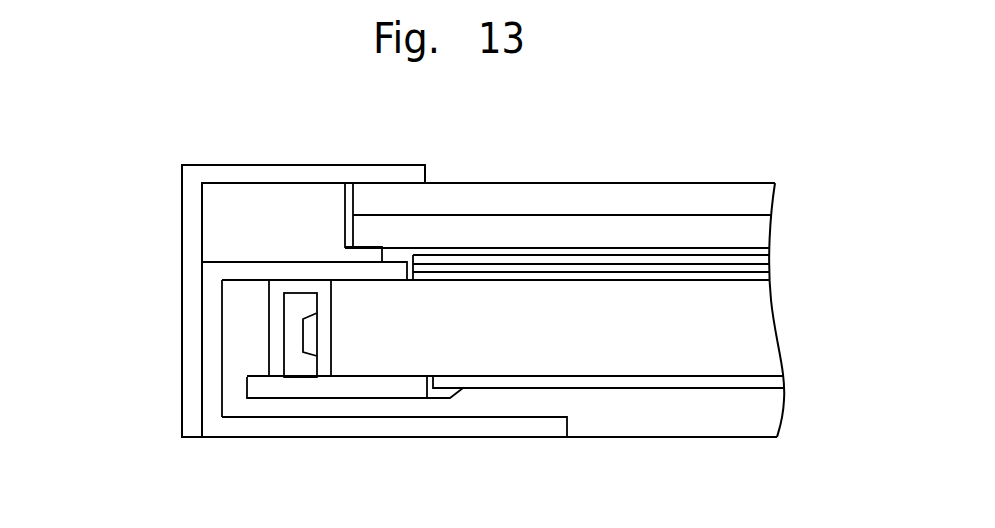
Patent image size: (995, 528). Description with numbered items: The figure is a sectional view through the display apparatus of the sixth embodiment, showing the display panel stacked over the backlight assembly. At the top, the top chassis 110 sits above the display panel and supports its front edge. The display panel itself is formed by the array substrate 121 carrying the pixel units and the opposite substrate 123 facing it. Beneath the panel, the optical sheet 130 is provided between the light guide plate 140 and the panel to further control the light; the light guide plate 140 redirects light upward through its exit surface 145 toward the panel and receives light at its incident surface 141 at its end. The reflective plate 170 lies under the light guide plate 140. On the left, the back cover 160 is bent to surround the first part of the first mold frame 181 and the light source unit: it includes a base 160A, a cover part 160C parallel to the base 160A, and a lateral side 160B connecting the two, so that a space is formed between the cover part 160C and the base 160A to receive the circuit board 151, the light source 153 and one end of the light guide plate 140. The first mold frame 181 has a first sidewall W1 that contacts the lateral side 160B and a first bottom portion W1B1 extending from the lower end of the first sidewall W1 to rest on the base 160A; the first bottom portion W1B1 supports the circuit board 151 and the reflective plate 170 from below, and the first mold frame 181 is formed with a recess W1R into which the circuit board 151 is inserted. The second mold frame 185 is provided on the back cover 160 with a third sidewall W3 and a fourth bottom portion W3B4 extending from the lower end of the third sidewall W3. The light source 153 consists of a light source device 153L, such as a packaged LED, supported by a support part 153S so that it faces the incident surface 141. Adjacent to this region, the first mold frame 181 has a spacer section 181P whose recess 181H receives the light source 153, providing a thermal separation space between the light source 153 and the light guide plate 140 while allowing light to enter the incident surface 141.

The top chassis 110 is at (397, 156).
The second mold frame 185 is at (222, 210).
The opposite substrate 123 is at (768, 199).
The array substrate 121 is at (761, 233).
The fourth bottom portion W3B4 is at (357, 255).
The third sidewall W3 is at (272, 194).
The optical sheet 130 is at (773, 253).
The light guide plate 140 is at (771, 333).
The reflective plate 170 is at (652, 380).
The exit surface 145 is at (597, 288).
The circuit board 151 is at (402, 390).
The first mold frame 181 is at (450, 410).
The back cover 160 is at (309, 348).
The cover part 160C is at (242, 272).
The lateral side 160B is at (213, 317).
The base 160A is at (329, 440).
The first sidewall W1 is at (237, 353).
The spacer section 181P is at (277, 298).
The incident surface 141 is at (334, 330).
The light source 153 is at (326, 415).
The light source device 153L is at (310, 352).
The support part 153S is at (295, 368).
The recess 181H is at (281, 343).
The recess W1R is at (245, 387).
The first bottom portion W1B1 is at (367, 408).